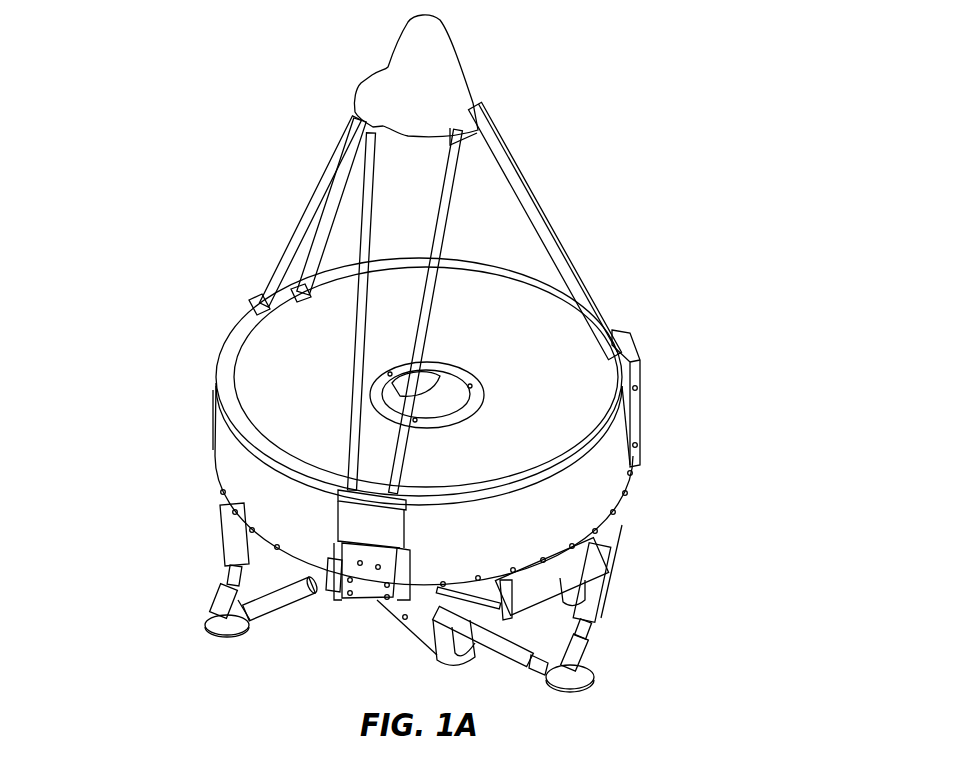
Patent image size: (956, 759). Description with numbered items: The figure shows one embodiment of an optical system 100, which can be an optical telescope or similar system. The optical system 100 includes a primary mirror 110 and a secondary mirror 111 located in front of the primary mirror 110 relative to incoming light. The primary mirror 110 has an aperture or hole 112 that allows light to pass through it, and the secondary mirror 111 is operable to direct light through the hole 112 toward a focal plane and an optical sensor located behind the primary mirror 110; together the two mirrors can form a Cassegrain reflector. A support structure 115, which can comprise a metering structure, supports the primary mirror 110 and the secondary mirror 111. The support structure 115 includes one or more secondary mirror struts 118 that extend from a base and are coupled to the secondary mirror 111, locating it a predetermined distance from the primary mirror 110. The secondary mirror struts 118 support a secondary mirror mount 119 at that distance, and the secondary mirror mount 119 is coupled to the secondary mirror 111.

The optical system 100 is at (196, 81).
The primary mirror 110 is at (257, 365).
The secondary mirror 111 is at (417, 151).
The hole 112 is at (449, 358).
The support structure 115 is at (216, 304).
The secondary mirror struts 118 is at (340, 153).
The secondary mirror mount 119 is at (375, 108).